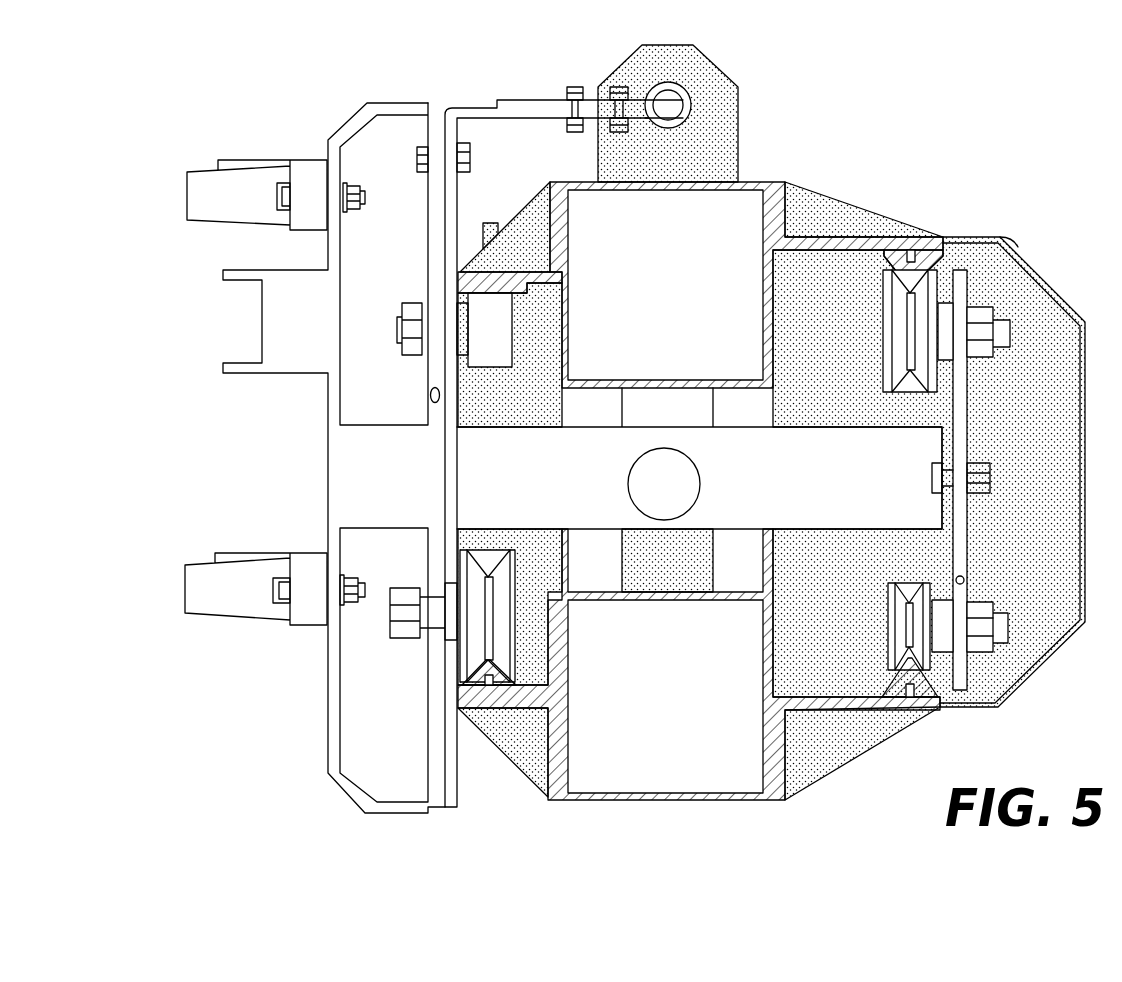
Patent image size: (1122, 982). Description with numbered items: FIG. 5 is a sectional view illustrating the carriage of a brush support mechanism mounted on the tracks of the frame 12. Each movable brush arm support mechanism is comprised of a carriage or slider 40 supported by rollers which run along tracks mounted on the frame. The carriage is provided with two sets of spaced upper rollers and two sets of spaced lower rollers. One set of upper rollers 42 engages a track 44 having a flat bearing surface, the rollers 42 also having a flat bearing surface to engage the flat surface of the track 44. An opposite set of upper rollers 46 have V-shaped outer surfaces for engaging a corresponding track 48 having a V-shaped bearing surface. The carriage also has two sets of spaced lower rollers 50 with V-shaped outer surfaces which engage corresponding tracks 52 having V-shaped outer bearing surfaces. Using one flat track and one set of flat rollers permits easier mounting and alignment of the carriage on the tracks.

The housing 12 is at (773, 190).
The carriage or slider 40 is at (328, 725).
The upper rollers 42 is at (480, 305).
The track 44 is at (467, 277).
The upper rollers 46 is at (927, 297).
The track 48 is at (942, 262).
The lower rollers 50 is at (483, 565).
The tracks 52 is at (482, 682).